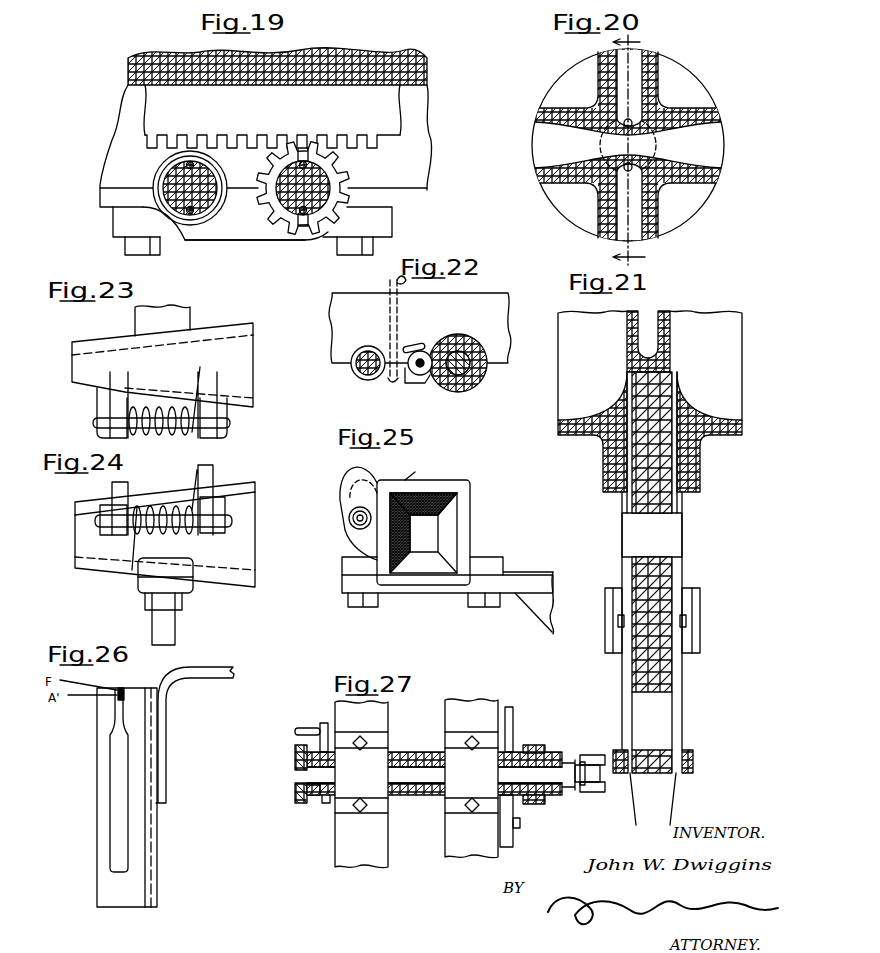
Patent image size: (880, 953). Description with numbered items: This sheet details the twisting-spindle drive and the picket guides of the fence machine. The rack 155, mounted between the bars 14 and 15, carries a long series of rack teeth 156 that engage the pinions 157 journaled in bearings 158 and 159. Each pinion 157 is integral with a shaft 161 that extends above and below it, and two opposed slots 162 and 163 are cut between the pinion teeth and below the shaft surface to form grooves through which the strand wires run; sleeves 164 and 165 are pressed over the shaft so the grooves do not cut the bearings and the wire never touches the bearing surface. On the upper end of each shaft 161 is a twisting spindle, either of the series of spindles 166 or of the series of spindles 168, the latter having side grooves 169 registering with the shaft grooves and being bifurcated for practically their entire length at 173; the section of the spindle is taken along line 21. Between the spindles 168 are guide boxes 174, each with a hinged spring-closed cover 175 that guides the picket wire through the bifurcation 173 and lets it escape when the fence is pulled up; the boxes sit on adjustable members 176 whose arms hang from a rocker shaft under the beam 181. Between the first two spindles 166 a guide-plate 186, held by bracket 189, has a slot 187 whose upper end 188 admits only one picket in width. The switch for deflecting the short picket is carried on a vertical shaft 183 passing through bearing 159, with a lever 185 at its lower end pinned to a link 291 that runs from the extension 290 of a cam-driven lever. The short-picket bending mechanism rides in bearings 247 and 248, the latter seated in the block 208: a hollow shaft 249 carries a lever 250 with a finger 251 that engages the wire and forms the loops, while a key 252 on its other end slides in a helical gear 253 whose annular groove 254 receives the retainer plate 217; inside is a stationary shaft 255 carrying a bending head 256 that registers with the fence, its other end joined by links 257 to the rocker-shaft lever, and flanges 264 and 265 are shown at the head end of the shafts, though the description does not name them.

In FIG. 19, the bar 15 is at (423, 175).
In FIG. 19, the rack 155 is at (398, 102).
In FIG. 19, the rack teeth 156 is at (395, 143).
In FIG. 19, the pinion 157 is at (346, 170).
In FIG. 21, the pinion 157 is at (700, 598).
In FIG. 19, the bearing 158 is at (215, 235).
In FIG. 22, the bearing 159 is at (417, 378).
In FIG. 19, the shaft 161 is at (282, 173).
In FIG. 21, the shaft 161 is at (657, 500).
In FIG. 22, the shaft 161 is at (355, 352).
In FIG. 19, the slot 162 is at (191, 162).
In FIG. 21, the slot 162 is at (620, 620).
In FIG. 19, the slot 163 is at (190, 214).
In FIG. 21, the slot 163 is at (686, 630).
In FIG. 21, the sleeve 164 is at (622, 577).
In FIG. 19, the sleeve 165 is at (212, 210).
In FIG. 21, the sleeve 165 is at (622, 675).
In FIG. 22, the twisting spindle 166 is at (362, 377).
In FIG. 20, the twisting spindle 168 is at (703, 210).
In FIG. 21, the twisting spindle 168 is at (742, 326).
In FIG. 22, the twisting spindle 168 is at (463, 352).
In FIG. 20, the groove 169 is at (632, 52).
In FIG. 20, the bifurcation 173 is at (700, 150).
In FIG. 21, the bifurcation 173 is at (645, 317).
In FIG. 22, the bar 14 is at (498, 353).
In FIG. 23, the guide box 174 is at (240, 408).
In FIG. 24, the guide box 174 is at (253, 552).
In FIG. 25, the guide box 174 is at (465, 530).
In FIG. 23, the hinged spring-closed cover 175 is at (255, 382).
In FIG. 24, the hinged spring-closed cover 175 is at (240, 482).
In FIG. 25, the hinged spring-closed cover 175 is at (442, 482).
In FIG. 23, the adjustable member 176 is at (188, 320).
In FIG. 24, the adjustable member 176 is at (170, 623).
In FIG. 25, the adjustable member 176 is at (532, 610).
In FIG. 27, the beam 181 is at (343, 845).
In FIG. 22, the vertical shaft 183 is at (423, 381).
In FIG. 22, the lever 185 is at (403, 377).
In FIG. 26, the guide-plate 186 is at (100, 768).
In FIG. 26, the slot 187 is at (117, 802).
In FIG. 26, the upper end of slot 188 is at (117, 710).
In FIG. 26, the bracket 189 is at (206, 675).
In FIG. 27, the support block 208 is at (453, 712).
In FIG. 27, the retainer plate 217 is at (513, 717).
In FIG. 20, the section line 21 is at (629, 151).
In FIG. 27, the bearing 247 is at (340, 805).
In FIG. 27, the bearing 248 is at (453, 805).
In FIG. 27, the hollow shaft 249 is at (445, 755).
In FIG. 27, the lever 250 is at (323, 725).
In FIG. 27, the finger 251 is at (312, 730).
In FIG. 27, the key 252 is at (548, 755).
In FIG. 27, the helical gear 253 is at (530, 747).
In FIG. 27, the annular groove 254 is at (517, 797).
In FIG. 27, the stationary shaft 255 is at (312, 773).
In FIG. 27, the bending head 256 is at (298, 796).
In FIG. 27, the link 257 is at (587, 793).
In FIG. 27, the flange 264 is at (295, 750).
In FIG. 27, the flange 265 is at (297, 787).
In FIG. 22, the extension 290 is at (396, 279).
In FIG. 22, the link 291 is at (392, 335).